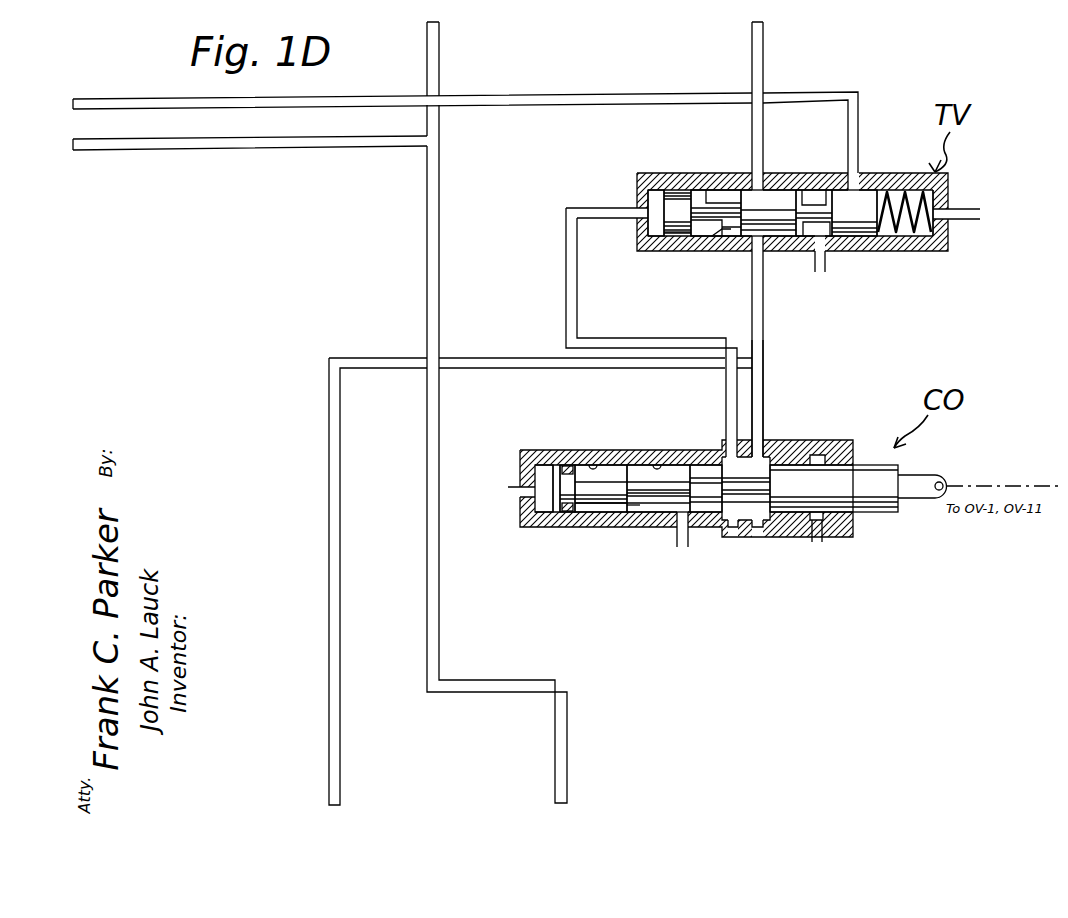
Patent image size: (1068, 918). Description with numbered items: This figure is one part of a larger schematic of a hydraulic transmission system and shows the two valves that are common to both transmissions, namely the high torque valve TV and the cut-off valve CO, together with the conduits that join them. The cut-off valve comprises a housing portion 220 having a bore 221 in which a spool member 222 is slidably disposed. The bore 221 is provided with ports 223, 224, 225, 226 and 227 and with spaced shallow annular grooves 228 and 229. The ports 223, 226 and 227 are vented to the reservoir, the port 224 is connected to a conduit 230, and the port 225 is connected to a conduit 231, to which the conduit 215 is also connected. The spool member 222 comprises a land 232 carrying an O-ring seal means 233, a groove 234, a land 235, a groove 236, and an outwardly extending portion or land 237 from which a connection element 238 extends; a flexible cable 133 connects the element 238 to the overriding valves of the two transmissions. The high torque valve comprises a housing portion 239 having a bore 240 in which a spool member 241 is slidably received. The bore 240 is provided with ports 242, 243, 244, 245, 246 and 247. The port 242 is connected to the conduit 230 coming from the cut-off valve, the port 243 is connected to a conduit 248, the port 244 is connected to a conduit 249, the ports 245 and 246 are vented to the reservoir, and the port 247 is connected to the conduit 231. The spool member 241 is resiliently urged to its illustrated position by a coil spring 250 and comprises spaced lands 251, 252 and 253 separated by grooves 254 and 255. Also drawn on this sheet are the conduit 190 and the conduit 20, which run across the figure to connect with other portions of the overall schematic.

The conduit 190 is at (439, 41).
The conduit 215 is at (340, 788).
The conduit 20 is at (121, 146).
The conduit 249 is at (100, 103).
The conduit 248 is at (763, 37).
The port 247 is at (760, 251).
The conduit 231 is at (763, 373).
The conduit 230 is at (660, 347).
The port 246 is at (823, 245).
The port 245 is at (942, 209).
The housing portion 239 is at (640, 186).
The port 242 is at (638, 212).
The bore 240 is at (727, 191).
The groove 254 is at (703, 206).
The spool member 241 is at (733, 232).
The land 251 is at (680, 237).
The land 252 is at (788, 209).
The groove 255 is at (817, 204).
The land 253 is at (863, 209).
The coil spring 250 is at (930, 226).
The port 243 is at (758, 184).
The port 244 is at (854, 178).
The housing portion 220 is at (527, 466).
The port 223 is at (523, 491).
The O-ring seal means 233 is at (568, 465).
The land 232 is at (600, 465).
The bore 221 is at (657, 465).
The groove 234 is at (660, 494).
The shallow annular groove 228 is at (580, 513).
The shallow annular groove 229 is at (637, 513).
The land 235 is at (717, 486).
The port 227 is at (690, 528).
The port 224 is at (726, 455).
The port 225 is at (762, 455).
The groove 236 is at (755, 480).
The outwardly extending portion or land 237 is at (882, 482).
The port 226 is at (818, 532).
The spool member 222 is at (880, 514).
The connection element 238 is at (937, 477).
The flexible cable 133 is at (1043, 486).